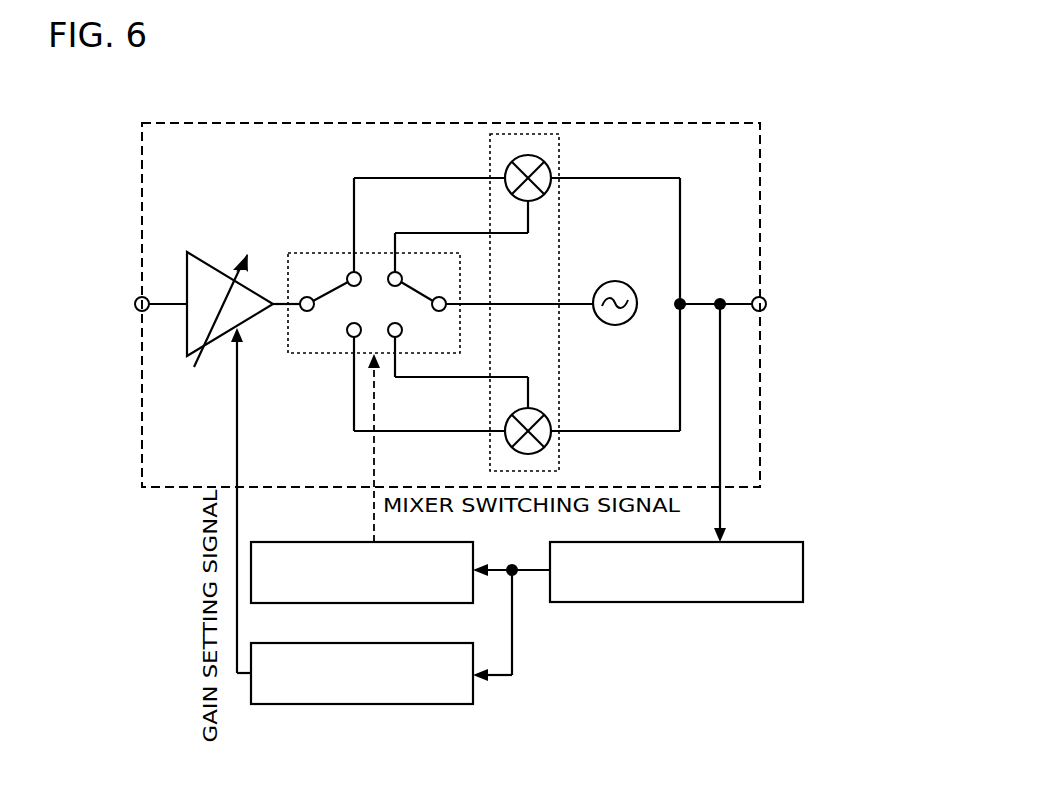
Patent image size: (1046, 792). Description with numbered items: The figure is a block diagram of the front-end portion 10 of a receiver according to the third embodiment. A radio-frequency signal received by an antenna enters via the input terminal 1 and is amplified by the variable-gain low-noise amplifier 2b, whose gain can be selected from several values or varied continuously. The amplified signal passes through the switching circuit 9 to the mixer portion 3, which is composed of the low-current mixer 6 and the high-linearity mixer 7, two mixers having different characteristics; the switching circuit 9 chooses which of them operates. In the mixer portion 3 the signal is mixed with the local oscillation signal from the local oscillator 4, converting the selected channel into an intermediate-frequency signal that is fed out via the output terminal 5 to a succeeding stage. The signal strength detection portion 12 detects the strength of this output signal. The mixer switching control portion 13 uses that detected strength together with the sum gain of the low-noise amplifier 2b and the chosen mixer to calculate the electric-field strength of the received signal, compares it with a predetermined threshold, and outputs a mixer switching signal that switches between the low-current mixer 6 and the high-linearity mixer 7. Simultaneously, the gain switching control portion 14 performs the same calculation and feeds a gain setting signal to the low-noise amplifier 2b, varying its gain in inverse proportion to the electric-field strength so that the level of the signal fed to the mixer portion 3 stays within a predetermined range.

The input terminal 1 is at (136, 299).
The variable-gain low-noise amplifier 2b is at (198, 258).
The mixer portion 3 is at (559, 152).
The local oscillator 4 is at (610, 326).
The output terminal 5 is at (766, 298).
The low-current mixer 6 is at (509, 162).
The high-linearity mixer 7 is at (511, 447).
The switching circuit 9 is at (328, 253).
The front-end portion 10 is at (613, 123).
The signal strength detection portion 12 is at (803, 562).
The mixer switching control portion 13 is at (358, 542).
The gain switching control portion 14 is at (357, 643).